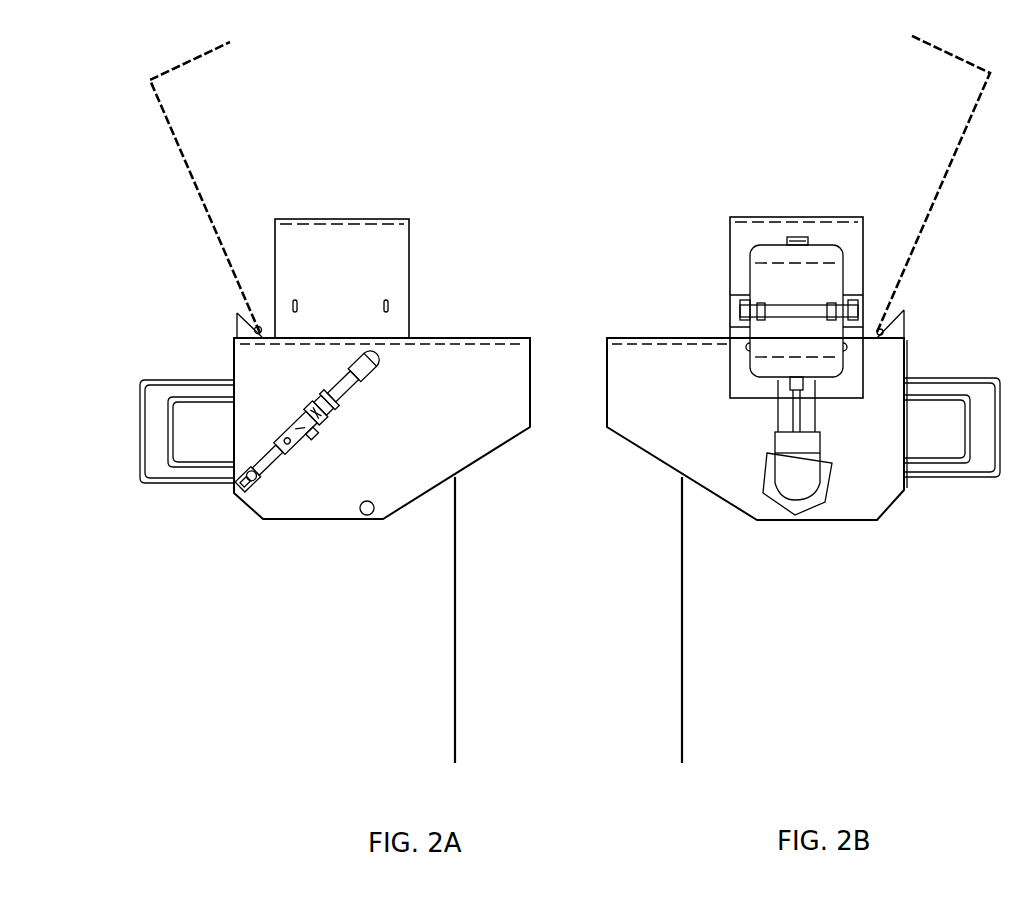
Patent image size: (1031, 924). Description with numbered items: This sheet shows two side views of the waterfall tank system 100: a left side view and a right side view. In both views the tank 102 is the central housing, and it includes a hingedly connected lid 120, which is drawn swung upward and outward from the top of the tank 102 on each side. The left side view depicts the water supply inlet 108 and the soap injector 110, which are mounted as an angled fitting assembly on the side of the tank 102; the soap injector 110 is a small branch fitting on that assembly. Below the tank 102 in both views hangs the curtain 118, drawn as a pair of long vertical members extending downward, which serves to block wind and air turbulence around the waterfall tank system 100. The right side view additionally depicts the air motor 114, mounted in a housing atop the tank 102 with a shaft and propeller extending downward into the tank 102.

In FIG. 2A, the waterfall tank system 100 is at (128, 43).
In FIG. 2A, the tank 102 is at (473, 423).
In FIG. 2B, the tank 102 is at (605, 537).
In FIG. 2A, the water supply inlet 108 is at (260, 513).
In FIG. 2A, the soap injector 110 is at (310, 453).
In FIG. 2B, the air motor 114 is at (772, 340).
In FIG. 2A, the curtain 118 is at (455, 627).
In FIG. 2B, the curtain 118 is at (682, 682).
In FIG. 2A, the lid 120 is at (212, 210).
In FIG. 2B, the lid 120 is at (965, 130).